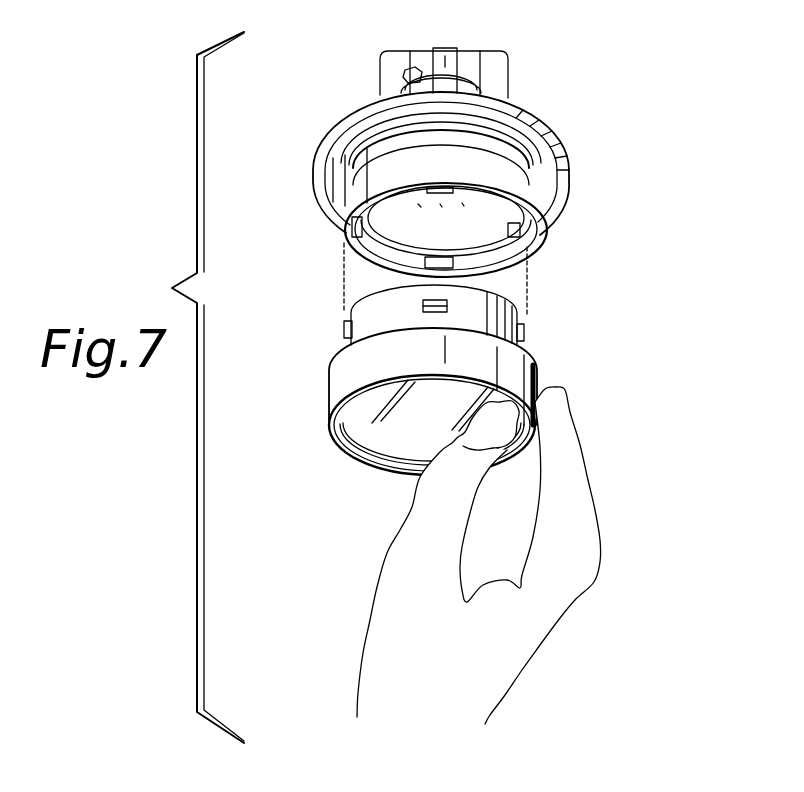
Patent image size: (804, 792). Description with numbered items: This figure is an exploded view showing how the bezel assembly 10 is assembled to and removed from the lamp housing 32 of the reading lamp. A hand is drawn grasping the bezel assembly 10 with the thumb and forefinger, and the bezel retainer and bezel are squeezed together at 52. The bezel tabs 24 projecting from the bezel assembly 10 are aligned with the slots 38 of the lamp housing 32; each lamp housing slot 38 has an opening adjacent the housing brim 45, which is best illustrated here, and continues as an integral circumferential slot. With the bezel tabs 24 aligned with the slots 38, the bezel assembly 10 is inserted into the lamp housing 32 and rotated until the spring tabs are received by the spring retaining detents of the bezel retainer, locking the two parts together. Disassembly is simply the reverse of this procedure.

The bezel assembly 10 is at (322, 365).
The bezel tabs 24 is at (521, 340).
The lamp housing 32 is at (590, 193).
The lamp housing slot 38 is at (528, 240).
The housing brim 45 is at (350, 222).
The squeezing location 52 is at (554, 382).